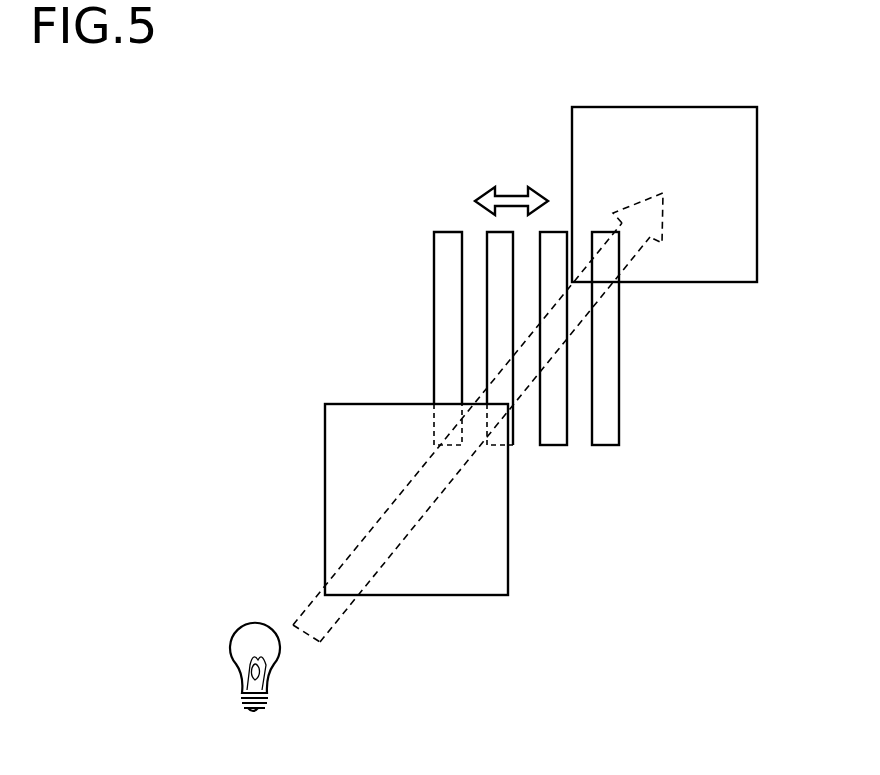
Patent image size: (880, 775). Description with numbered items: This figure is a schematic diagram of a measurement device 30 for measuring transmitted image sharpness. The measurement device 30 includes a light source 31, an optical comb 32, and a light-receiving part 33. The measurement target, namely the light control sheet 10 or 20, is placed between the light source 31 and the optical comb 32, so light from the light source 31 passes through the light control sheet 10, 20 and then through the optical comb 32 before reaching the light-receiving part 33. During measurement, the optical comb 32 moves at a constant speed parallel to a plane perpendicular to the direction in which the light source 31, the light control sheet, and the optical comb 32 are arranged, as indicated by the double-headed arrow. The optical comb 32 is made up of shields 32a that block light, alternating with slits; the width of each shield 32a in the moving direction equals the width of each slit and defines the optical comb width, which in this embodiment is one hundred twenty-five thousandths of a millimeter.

The measurement device 30 is at (401, 104).
The light source 31 is at (230, 645).
The optical comb 32 is at (619, 370).
The shield 32a is at (447, 232).
The light-receiving part 33 is at (757, 195).
The light control sheet 10 is at (469, 499).
The light control sheet 20 is at (508, 520).